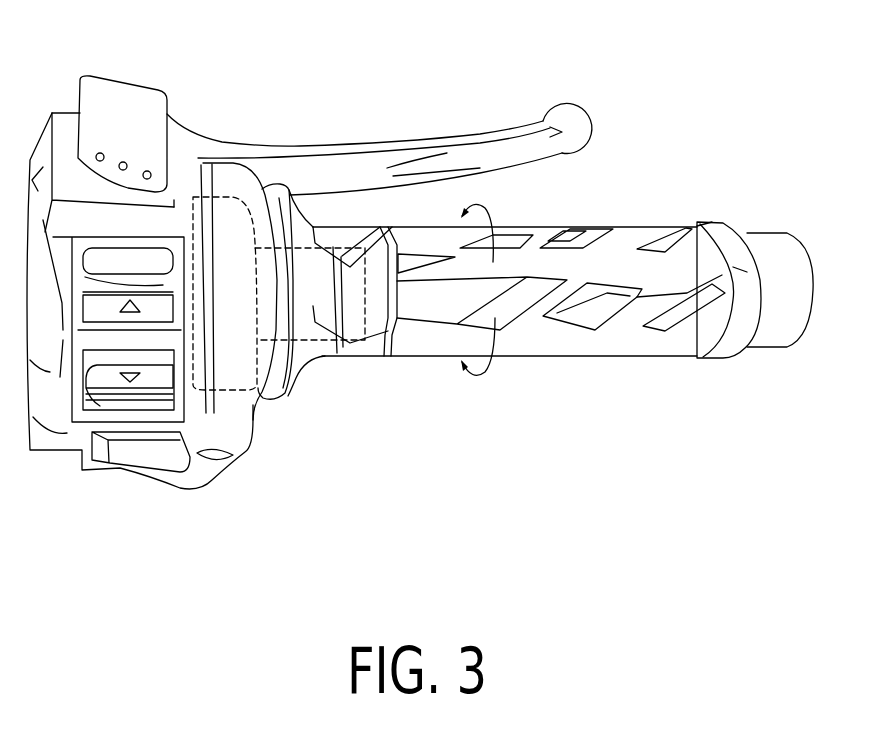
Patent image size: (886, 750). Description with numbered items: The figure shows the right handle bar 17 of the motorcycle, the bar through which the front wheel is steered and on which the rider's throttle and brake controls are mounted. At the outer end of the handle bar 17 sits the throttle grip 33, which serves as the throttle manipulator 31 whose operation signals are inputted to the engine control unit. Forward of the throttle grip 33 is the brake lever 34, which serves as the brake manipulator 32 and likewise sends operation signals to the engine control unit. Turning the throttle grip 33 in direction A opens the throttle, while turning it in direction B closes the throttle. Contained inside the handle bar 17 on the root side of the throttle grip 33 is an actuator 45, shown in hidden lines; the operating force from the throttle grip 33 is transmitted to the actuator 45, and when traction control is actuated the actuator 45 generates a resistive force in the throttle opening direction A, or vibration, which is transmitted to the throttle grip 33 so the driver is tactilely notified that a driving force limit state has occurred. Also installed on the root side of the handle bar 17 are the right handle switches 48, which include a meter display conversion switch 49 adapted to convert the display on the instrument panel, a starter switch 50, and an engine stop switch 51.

The handle bar 17 is at (735, 151).
The throttle manipulator 31 is at (670, 368).
The brake manipulator 32 is at (372, 90).
The throttle grip 33 is at (580, 313).
The brake lever 34 is at (489, 130).
The actuator 45 is at (256, 367).
The right handle switches 48 is at (179, 198).
The meter display conversion switch 49 is at (177, 340).
The starter switch 50 is at (139, 468).
The engine stop switch 51 is at (140, 77).
The throttle opening direction A is at (488, 373).
The throttle closing direction B is at (482, 207).